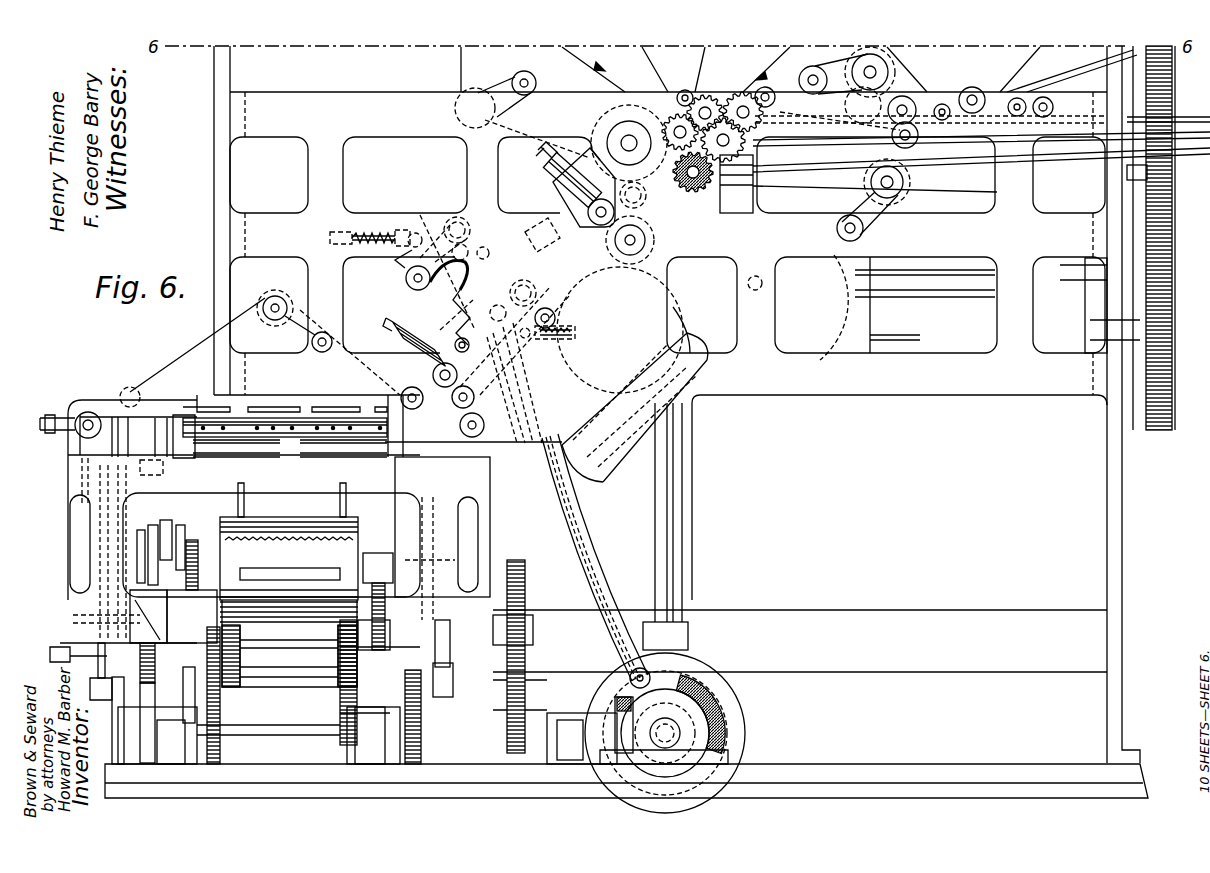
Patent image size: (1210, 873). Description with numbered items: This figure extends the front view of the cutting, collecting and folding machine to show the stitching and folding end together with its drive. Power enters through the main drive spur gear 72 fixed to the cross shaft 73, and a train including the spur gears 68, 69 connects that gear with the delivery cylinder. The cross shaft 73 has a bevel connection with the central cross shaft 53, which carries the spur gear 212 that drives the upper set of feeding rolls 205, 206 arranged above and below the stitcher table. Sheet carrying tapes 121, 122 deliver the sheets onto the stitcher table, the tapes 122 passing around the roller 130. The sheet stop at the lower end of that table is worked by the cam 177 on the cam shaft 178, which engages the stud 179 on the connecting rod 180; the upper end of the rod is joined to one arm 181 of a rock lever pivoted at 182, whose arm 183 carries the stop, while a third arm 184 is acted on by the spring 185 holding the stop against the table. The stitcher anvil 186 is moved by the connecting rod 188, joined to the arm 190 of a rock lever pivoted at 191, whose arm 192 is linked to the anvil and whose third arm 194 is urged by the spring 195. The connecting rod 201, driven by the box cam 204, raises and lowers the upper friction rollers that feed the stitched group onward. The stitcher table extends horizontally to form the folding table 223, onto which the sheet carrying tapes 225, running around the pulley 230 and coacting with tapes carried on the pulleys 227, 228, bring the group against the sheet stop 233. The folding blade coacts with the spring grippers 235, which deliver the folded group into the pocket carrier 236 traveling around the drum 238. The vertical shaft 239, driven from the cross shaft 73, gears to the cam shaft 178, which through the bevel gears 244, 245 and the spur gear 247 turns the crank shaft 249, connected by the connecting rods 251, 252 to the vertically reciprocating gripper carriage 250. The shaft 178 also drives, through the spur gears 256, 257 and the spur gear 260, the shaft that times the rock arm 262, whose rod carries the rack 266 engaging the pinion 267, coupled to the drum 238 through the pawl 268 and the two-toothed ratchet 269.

The cross shaft 53 is at (755, 290).
The spur gear 68 is at (1197, 168).
The spur gear 69 is at (1168, 238).
The main drive spur gear 72 is at (1145, 330).
The cross shaft 73 is at (952, 290).
The sheet carrying tapes 121 is at (655, 58).
The sheet carrying tapes 122 is at (455, 68).
The roller 130 is at (600, 134).
The cam 177 is at (700, 712).
The cam shaft 178 is at (672, 742).
The stud 179 is at (648, 678).
The connecting rod 180 is at (590, 568).
The arm 181 is at (480, 380).
The pivot 182 is at (500, 372).
The arm 183 is at (433, 375).
The arm 184 is at (530, 348).
The spring 185 is at (570, 330).
The stitcher anvil 186 is at (534, 236).
The connecting rod 188 is at (572, 508).
The arm 190 is at (450, 303).
The pivot 191 is at (406, 283).
The arm 192 is at (433, 247).
The arm 194 is at (406, 277).
The spring 195 is at (365, 230).
The connecting rod 201 is at (558, 480).
The box cam 204 is at (700, 680).
The feeding roll 205 is at (587, 212).
The feeding roll 206 is at (645, 240).
The spur gear 212 is at (702, 324).
The folding table 223 is at (260, 415).
The sheet carrying tapes 225 is at (98, 405).
The pulley 227 is at (130, 387).
The pulley 228 is at (275, 296).
The pulley 230 is at (78, 418).
The sheet stop 233 is at (195, 408).
The spring grippers 235 is at (323, 415).
The pocket carrier 236 is at (289, 585).
The drum 238 is at (355, 548).
The vertical shaft 239 is at (678, 528).
The bevel gear 244 is at (712, 698).
The bevel gear 245 is at (620, 695).
The spur gear 247 is at (380, 692).
The crank shaft 249 is at (305, 728).
The gripper carriage 250 is at (287, 442).
The connecting rod 251 is at (114, 671).
The connecting rod 252 is at (428, 658).
The spur gear 256 is at (560, 712).
The spur gear 257 is at (525, 555).
The spur gear 260 is at (205, 752).
The rock arm 262 is at (150, 688).
The rack 266 is at (180, 535).
The pinion 267 is at (160, 540).
The pawl 268 is at (137, 545).
The two-toothed ratchet 269 is at (150, 570).